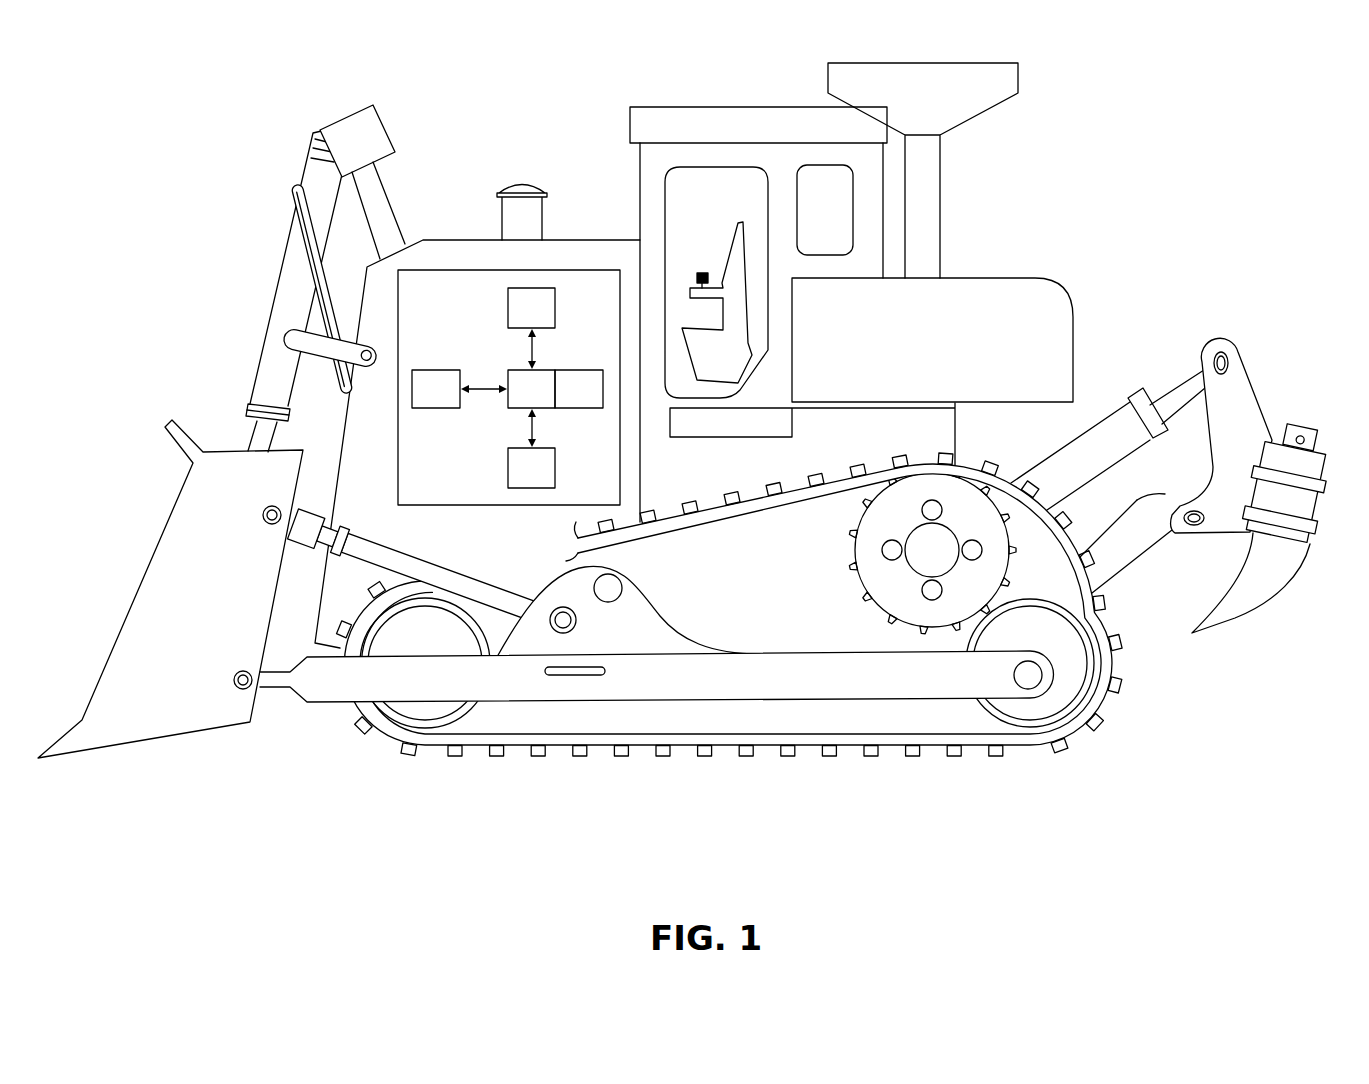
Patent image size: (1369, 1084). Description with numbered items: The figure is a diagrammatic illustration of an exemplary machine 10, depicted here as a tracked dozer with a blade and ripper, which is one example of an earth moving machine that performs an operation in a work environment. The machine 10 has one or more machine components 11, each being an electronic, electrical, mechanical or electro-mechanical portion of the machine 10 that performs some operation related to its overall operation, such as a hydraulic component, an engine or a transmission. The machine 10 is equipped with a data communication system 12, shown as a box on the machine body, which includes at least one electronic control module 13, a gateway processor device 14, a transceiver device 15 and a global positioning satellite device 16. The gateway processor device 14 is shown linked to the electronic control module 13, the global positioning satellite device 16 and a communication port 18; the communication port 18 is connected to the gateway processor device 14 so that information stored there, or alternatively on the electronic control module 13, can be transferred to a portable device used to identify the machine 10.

The machine 10 is at (1064, 206).
The machine component 11 is at (468, 571).
The data communication system 12 is at (553, 270).
The electronic control module 13 is at (516, 480).
The gateway processor device 14 is at (516, 401).
The transceiver device 15 is at (563, 401).
The global positioning satellite device 16 is at (516, 320).
The communication port 18 is at (420, 401).